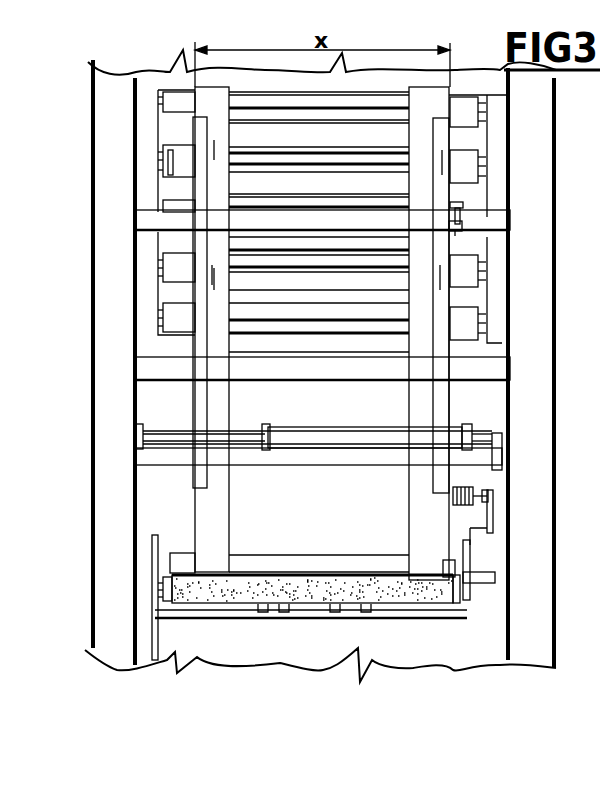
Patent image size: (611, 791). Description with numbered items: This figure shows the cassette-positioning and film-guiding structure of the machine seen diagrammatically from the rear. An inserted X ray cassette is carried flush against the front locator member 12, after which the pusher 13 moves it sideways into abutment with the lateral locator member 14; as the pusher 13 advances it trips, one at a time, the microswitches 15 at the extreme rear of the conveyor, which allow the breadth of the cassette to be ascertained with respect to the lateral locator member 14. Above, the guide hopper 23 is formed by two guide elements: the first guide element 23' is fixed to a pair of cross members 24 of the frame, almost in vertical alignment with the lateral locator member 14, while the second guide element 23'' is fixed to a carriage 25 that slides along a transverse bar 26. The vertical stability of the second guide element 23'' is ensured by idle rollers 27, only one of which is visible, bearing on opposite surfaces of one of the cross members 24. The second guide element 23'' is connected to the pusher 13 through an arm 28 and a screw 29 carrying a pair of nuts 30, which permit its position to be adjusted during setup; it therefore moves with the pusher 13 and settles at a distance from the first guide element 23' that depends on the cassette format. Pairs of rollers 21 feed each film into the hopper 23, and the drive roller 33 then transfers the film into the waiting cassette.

The front locator member 12 is at (220, 603).
The pusher 13 is at (473, 567).
The lateral locator member 14 is at (150, 570).
The microswitches 15 is at (262, 622).
The pair of rollers 21 is at (162, 130).
The guide hopper 23 is at (115, 292).
The first guide element 23' is at (114, 102).
The second guide element 23'' is at (515, 218).
The cross members 24 is at (150, 211).
The carriage 25 is at (453, 428).
The bar 26 is at (168, 432).
The idle rollers 27 is at (452, 225).
The arm 28 is at (473, 528).
The screw 29 is at (485, 490).
The nuts 30 is at (413, 593).
The drive roller 33 is at (275, 560).